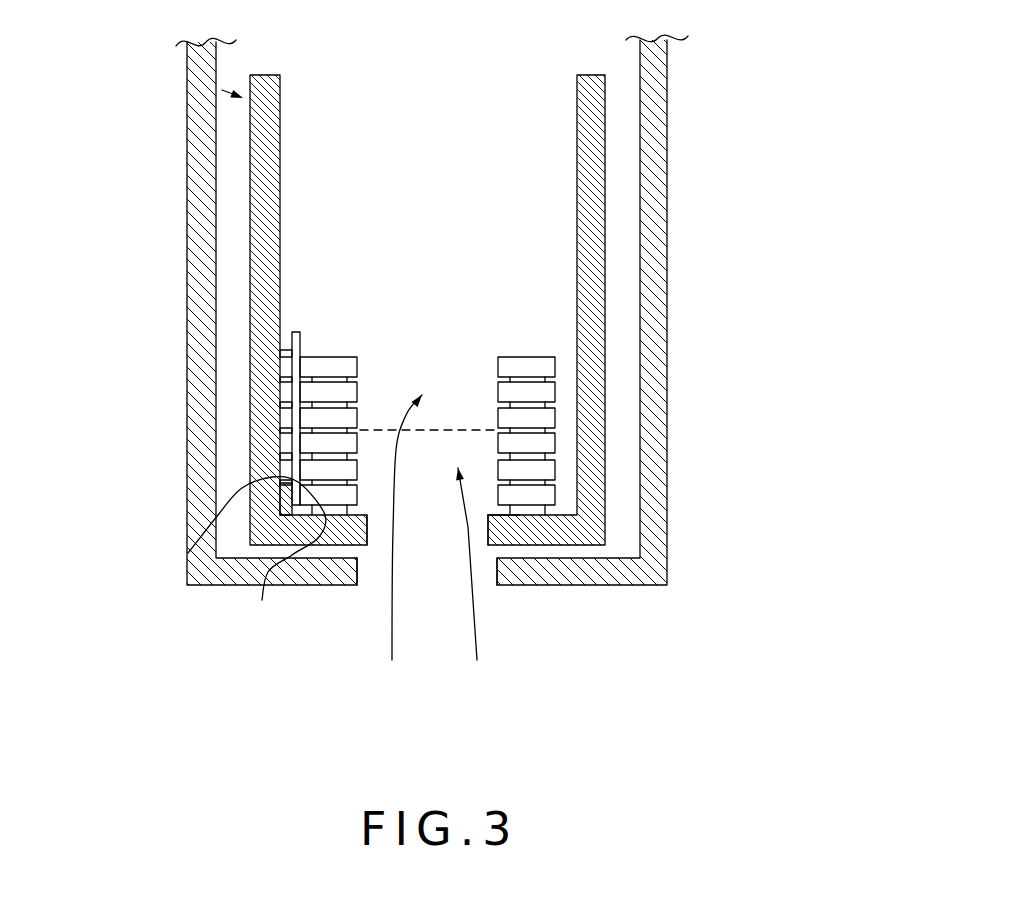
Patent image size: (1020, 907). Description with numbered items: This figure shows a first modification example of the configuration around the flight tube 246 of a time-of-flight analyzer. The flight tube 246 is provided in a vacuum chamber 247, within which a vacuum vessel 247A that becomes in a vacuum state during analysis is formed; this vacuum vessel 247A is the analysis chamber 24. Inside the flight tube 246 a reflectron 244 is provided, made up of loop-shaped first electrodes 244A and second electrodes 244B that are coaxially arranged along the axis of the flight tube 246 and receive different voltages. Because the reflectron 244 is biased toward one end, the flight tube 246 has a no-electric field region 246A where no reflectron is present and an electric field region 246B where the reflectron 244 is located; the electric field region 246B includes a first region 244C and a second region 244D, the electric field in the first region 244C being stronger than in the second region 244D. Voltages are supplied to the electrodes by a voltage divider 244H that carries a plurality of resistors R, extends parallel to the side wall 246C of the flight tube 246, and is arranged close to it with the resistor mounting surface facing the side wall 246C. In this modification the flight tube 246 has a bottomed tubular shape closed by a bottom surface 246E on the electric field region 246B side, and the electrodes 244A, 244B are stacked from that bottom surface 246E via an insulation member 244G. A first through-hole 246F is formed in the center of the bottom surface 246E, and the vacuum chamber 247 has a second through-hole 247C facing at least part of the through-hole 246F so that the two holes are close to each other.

The analysis chamber 24 is at (475, 398).
The vacuum chamber 247 is at (187, 138).
The vacuum vessel 247A is at (222, 90).
The through-hole (second through-hole) 247C is at (377, 577).
The flight tube 246 is at (397, 418).
The no-electric field region 246A is at (474, 203).
The electric field region 246B is at (553, 703).
The side wall 246C is at (248, 262).
The bottom surface 246E is at (580, 533).
The through-hole (first through-hole) 246F is at (500, 527).
The reflectron 244 is at (567, 497).
The first electrode 244A is at (563, 357).
The second electrode 244B is at (563, 433).
The first region (first stage) 244C is at (387, 546).
The second region (second stage) 244D is at (506, 582).
The insulation member 244G is at (268, 572).
The voltage divider 244H is at (300, 343).
The resistor R is at (187, 556).